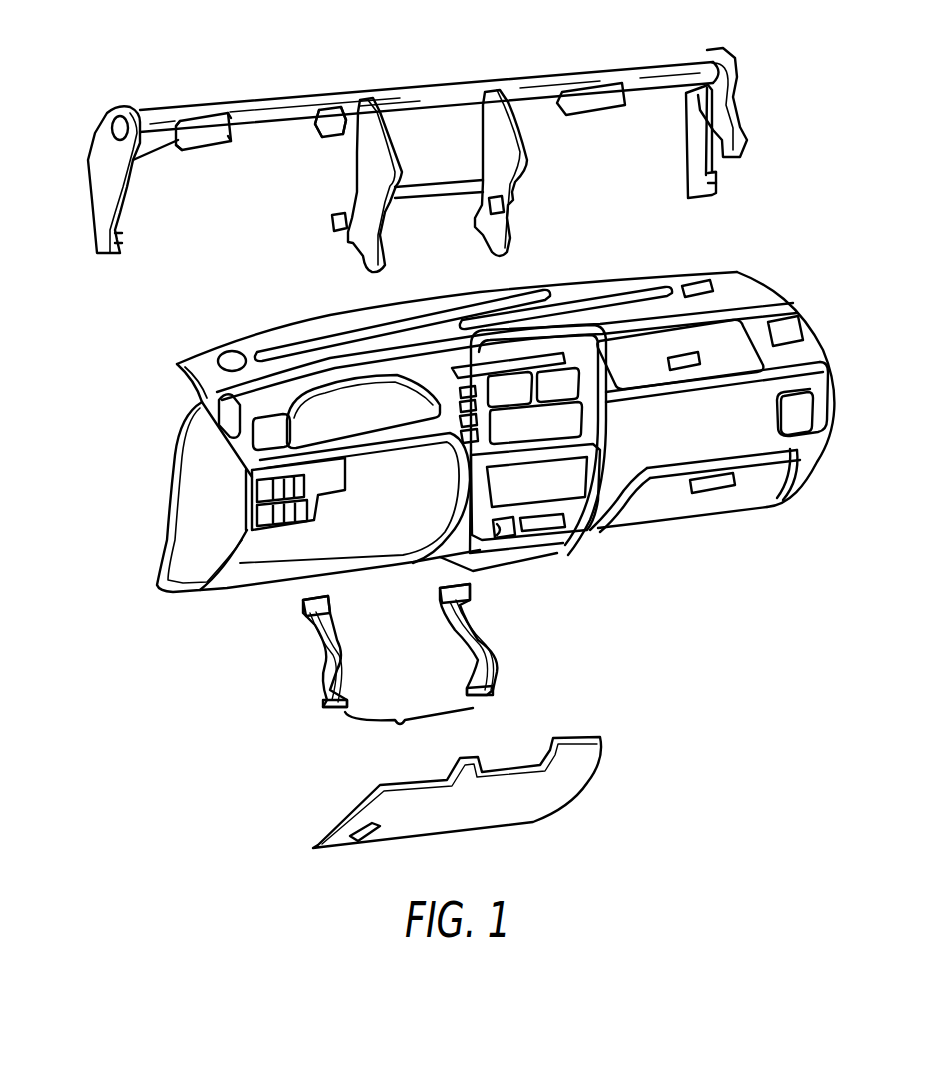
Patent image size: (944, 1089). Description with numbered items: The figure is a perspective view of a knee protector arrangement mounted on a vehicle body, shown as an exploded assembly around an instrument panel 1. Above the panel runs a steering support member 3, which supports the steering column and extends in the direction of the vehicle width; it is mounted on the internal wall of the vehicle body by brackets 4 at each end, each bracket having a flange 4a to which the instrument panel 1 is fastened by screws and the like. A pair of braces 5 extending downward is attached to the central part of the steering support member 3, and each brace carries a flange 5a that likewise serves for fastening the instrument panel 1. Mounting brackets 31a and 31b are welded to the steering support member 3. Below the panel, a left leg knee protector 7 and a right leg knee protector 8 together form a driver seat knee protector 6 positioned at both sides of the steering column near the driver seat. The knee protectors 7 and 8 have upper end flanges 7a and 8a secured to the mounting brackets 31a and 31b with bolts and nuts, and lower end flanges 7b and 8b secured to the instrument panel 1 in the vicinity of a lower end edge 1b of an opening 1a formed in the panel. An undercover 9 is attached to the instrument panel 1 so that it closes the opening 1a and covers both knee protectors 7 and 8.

The instrument panel 1 is at (516, 454).
The opening 1a is at (394, 530).
The lower end edge 1b is at (240, 582).
The steering support member 3 is at (645, 68).
The mounting bracket 31a is at (201, 121).
The mounting bracket 31b is at (330, 109).
The brackets 4 is at (100, 150).
The flange 4a is at (123, 245).
The braces 5 is at (392, 258).
The flange 5a is at (332, 228).
The driver seat knee protector 6 is at (399, 669).
The left leg knee protector 7 is at (286, 671).
The upper end flange 7a is at (298, 613).
The lower end flange 7b is at (301, 723).
The right leg knee protector 8 is at (506, 639).
The upper end flange 8a is at (470, 593).
The lower end flange 8b is at (492, 690).
The undercover 9 is at (573, 788).